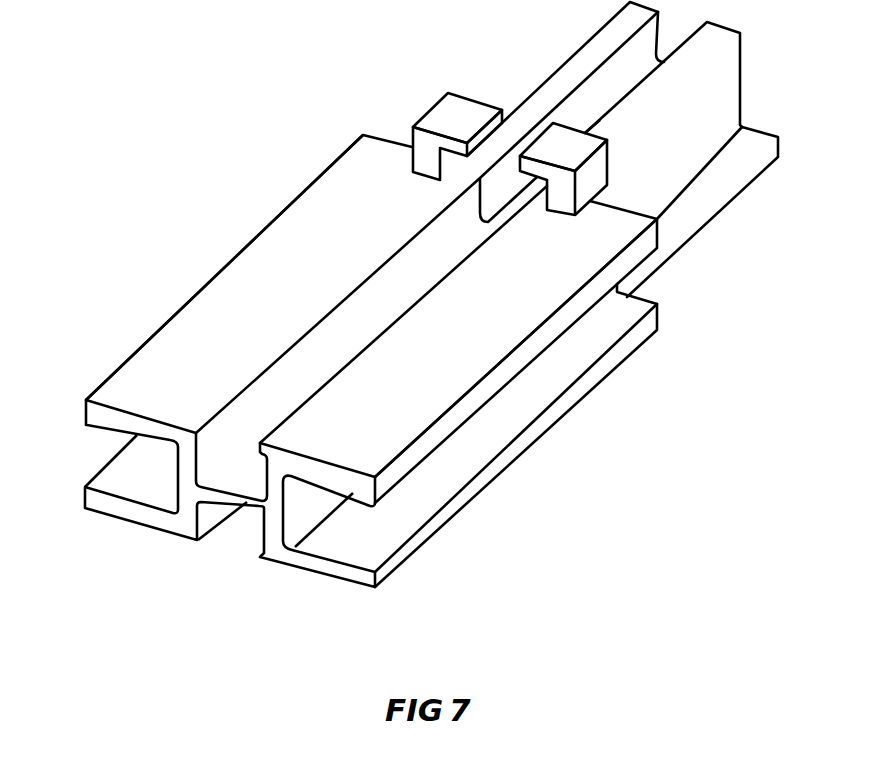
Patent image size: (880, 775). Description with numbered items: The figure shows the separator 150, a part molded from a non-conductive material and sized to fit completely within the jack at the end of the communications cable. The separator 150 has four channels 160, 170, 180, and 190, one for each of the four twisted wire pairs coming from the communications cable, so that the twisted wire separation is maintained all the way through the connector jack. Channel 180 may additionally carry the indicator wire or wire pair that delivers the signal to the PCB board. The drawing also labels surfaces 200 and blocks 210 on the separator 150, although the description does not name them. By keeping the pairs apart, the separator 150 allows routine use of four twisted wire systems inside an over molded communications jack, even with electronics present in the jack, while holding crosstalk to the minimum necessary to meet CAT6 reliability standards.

The separator 150 is at (133, 62).
The channel 160 is at (117, 468).
The channel 170 is at (248, 505).
The channel 180 is at (352, 538).
The channel 190 is at (265, 412).
The mounting surface 200 is at (245, 247).
The retaining block 210 is at (445, 112).